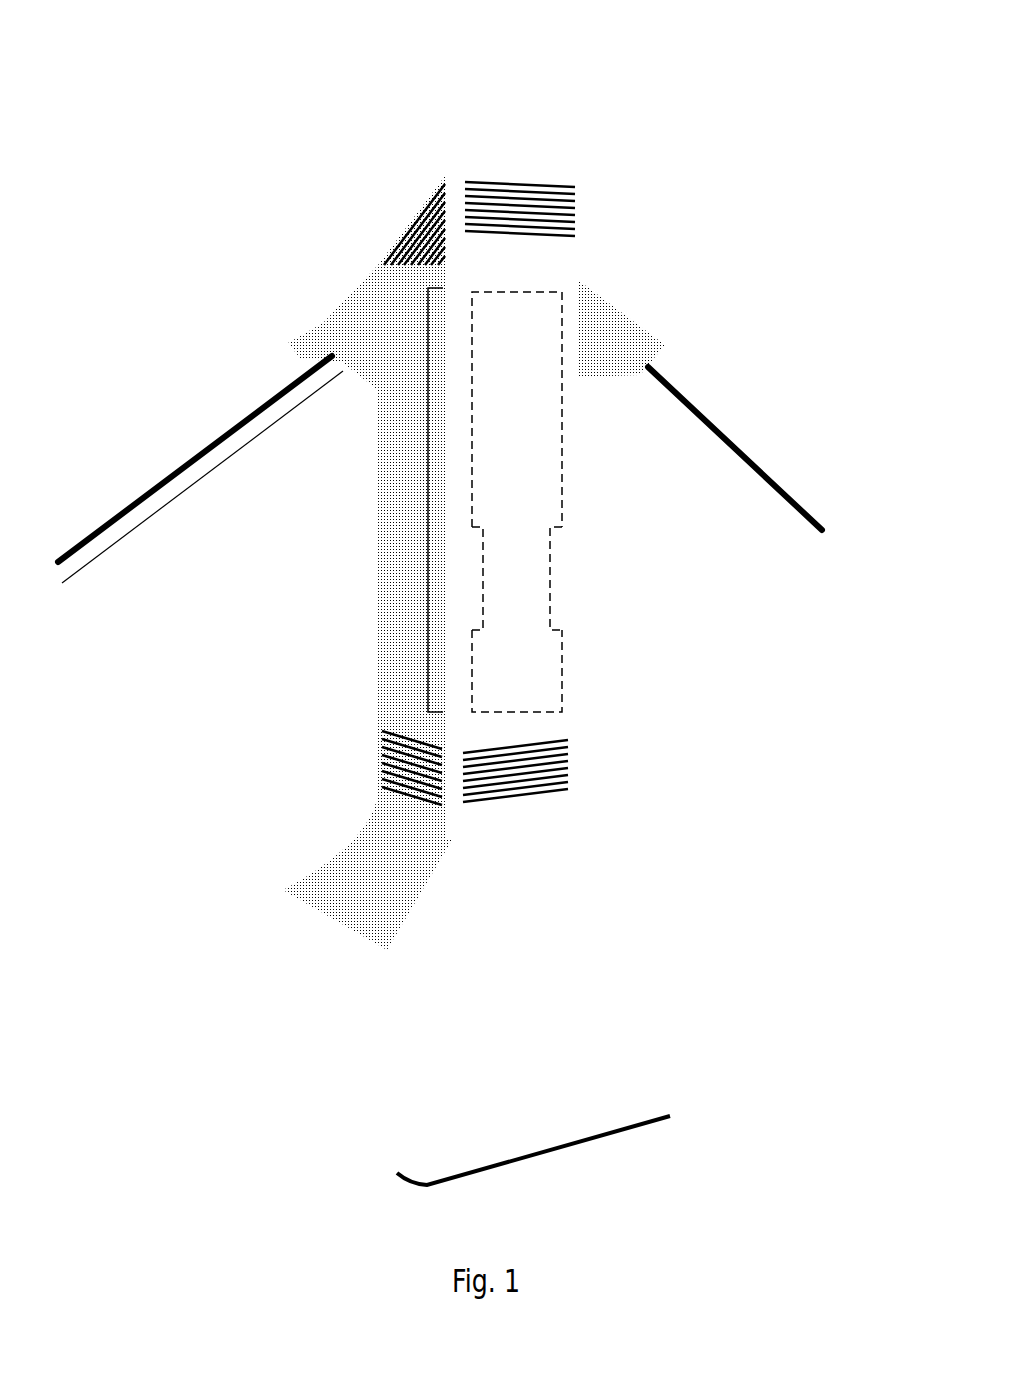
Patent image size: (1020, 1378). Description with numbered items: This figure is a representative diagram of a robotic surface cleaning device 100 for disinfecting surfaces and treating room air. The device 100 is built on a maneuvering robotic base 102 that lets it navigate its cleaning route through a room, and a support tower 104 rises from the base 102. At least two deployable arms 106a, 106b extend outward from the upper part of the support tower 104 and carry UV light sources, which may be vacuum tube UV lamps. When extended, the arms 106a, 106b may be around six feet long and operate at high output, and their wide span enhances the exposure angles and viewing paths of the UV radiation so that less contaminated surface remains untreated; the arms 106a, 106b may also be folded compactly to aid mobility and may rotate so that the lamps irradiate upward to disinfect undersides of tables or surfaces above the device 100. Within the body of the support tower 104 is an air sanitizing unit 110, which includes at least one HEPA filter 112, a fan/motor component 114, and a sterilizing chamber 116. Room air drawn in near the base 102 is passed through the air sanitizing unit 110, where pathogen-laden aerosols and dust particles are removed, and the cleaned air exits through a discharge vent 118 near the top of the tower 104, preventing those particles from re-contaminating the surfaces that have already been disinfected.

The robotic surface cleaning device 100 is at (547, 148).
The maneuvering robotic base 102 is at (283, 1020).
The support tower 104 is at (374, 599).
The deployable arm 106a is at (287, 347).
The deployable arm 106b is at (673, 355).
The air sanitizing unit 110 is at (430, 499).
The HEPA filter 112 is at (565, 670).
The fan/motor component 114 is at (549, 560).
The sterilizing chamber 116 is at (565, 470).
The discharge vent 118 is at (581, 218).